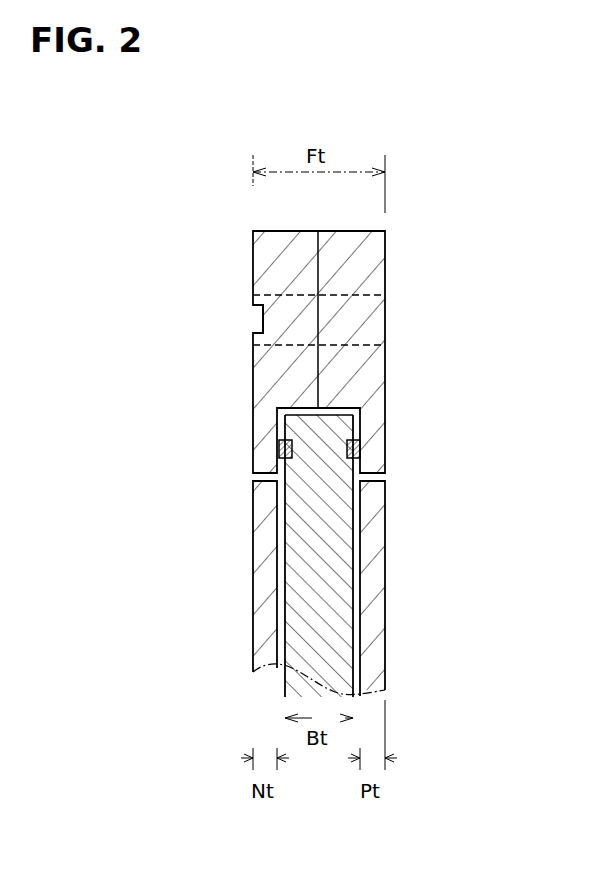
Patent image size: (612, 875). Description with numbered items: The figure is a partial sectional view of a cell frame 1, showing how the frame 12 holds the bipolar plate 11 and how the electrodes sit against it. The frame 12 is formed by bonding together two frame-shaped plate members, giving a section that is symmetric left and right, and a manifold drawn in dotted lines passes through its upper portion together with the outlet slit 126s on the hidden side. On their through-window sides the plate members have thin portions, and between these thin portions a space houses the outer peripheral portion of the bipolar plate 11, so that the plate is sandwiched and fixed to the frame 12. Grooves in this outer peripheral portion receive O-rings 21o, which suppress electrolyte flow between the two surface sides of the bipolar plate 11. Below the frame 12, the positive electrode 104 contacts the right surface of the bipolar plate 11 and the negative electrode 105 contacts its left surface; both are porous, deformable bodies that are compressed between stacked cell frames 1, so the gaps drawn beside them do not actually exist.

The cell frame 1 is at (205, 203).
The frame 12 is at (387, 262).
The outlet slit 126s is at (262, 320).
The O-ring 21o is at (347, 446).
The bipolar plate 11 is at (300, 610).
The negative electrode 105 is at (262, 502).
The positive electrode 104 is at (387, 535).